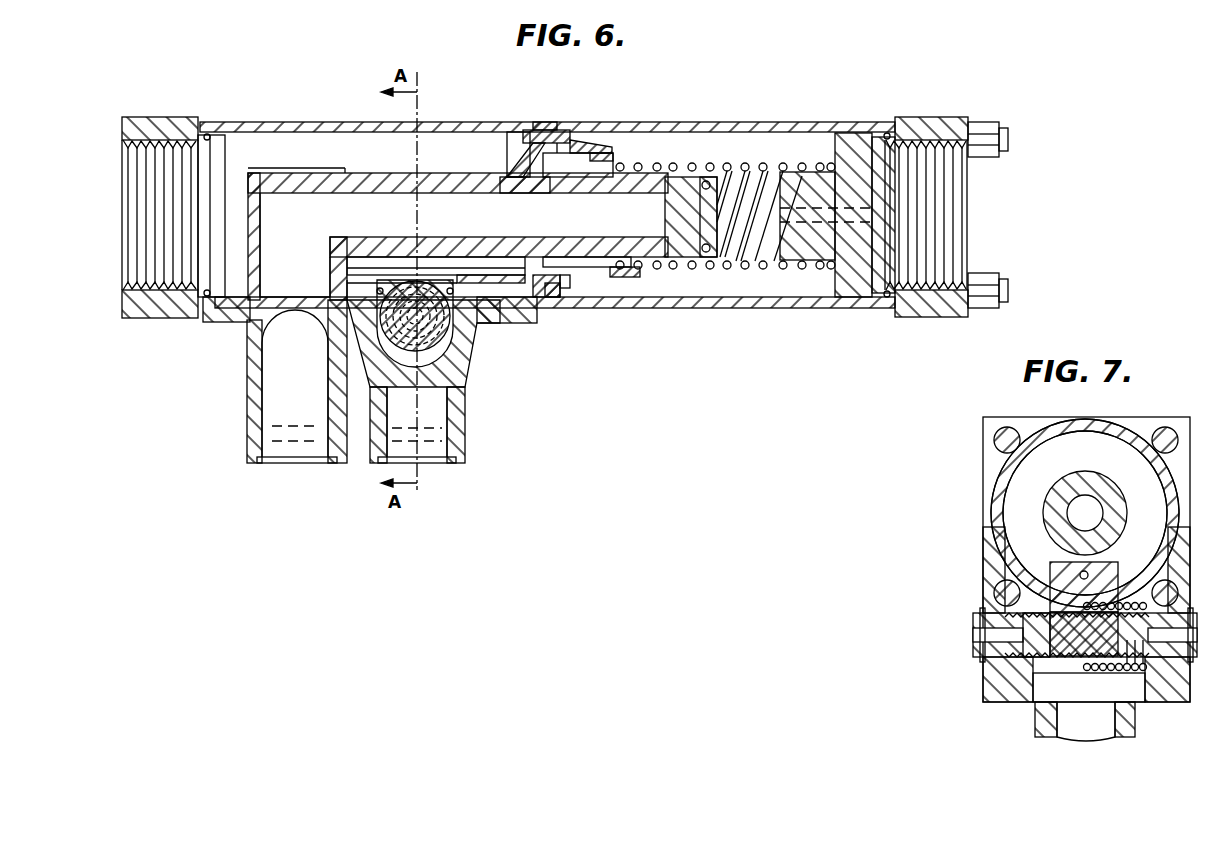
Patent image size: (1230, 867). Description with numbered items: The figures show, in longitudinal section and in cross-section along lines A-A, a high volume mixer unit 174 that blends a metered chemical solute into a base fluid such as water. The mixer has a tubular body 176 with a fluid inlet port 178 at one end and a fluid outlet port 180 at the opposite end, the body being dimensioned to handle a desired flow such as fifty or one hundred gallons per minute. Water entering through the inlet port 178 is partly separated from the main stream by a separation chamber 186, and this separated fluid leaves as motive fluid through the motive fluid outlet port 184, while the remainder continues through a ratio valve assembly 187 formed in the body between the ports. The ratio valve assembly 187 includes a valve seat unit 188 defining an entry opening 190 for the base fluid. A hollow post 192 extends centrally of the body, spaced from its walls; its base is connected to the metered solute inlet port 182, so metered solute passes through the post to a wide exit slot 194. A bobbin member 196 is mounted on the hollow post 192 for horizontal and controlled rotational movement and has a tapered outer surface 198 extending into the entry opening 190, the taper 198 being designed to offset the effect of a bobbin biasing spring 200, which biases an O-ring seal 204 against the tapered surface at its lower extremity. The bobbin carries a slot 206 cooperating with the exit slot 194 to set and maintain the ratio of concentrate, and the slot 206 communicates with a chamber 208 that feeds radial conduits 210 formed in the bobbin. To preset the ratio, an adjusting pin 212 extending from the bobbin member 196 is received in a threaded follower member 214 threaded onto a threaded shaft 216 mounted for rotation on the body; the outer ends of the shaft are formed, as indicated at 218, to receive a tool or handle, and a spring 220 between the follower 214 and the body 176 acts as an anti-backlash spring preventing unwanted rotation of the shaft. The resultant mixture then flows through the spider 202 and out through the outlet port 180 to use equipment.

In FIG. 6, the high volume mixer unit 174 is at (924, 327).
In FIG. 6, the tubular body 176 is at (446, 122).
In FIG. 7, the tubular body 176 is at (1163, 470).
In FIG. 6, the fluid inlet port 178 is at (158, 300).
In FIG. 6, the fluid outlet port 180 is at (950, 193).
In FIG. 6, the metered solute inlet port 182 is at (268, 405).
In FIG. 6, the motive fluid outlet port 184 is at (440, 418).
In FIG. 7, the motive fluid outlet port 184 is at (1053, 714).
In FIG. 6, the separation chamber 186 is at (470, 350).
In FIG. 7, the separation chamber 186 is at (1150, 690).
In FIG. 6, the ratio valve assembly 187 is at (630, 140).
In FIG. 6, the valve seat unit 188 is at (545, 124).
In FIG. 6, the entry opening 190 is at (510, 133).
In FIG. 6, the hollow post 192 is at (436, 190).
In FIG. 7, the hollow post 192 is at (1150, 507).
In FIG. 6, the exit slot 194 is at (667, 190).
In FIG. 6, the bobbin member 196 is at (640, 288).
In FIG. 6, the tapered outer surface 198 is at (590, 140).
In FIG. 6, the bobbin biasing spring 200 is at (755, 265).
In FIG. 6, the spider 202 is at (851, 290).
In FIG. 6, the O-ring seal 204 is at (585, 290).
In FIG. 6, the slot 206 is at (562, 190).
In FIG. 6, the chamber 208 is at (590, 170).
In FIG. 6, the radial conduits 210 is at (558, 297).
In FIG. 6, the adjusting pin 212 is at (360, 266).
In FIG. 7, the adjusting pin 212 is at (1118, 585).
In FIG. 6, the threaded follower member 214 is at (375, 302).
In FIG. 7, the threaded follower member 214 is at (1050, 570).
In FIG. 6, the threaded shaft 216 is at (466, 374).
In FIG. 7, the threaded shaft 216 is at (1035, 642).
In FIG. 7, the formed outer ends 218 is at (1197, 638).
In FIG. 7, the anti-backlash spring 220 is at (1103, 672).